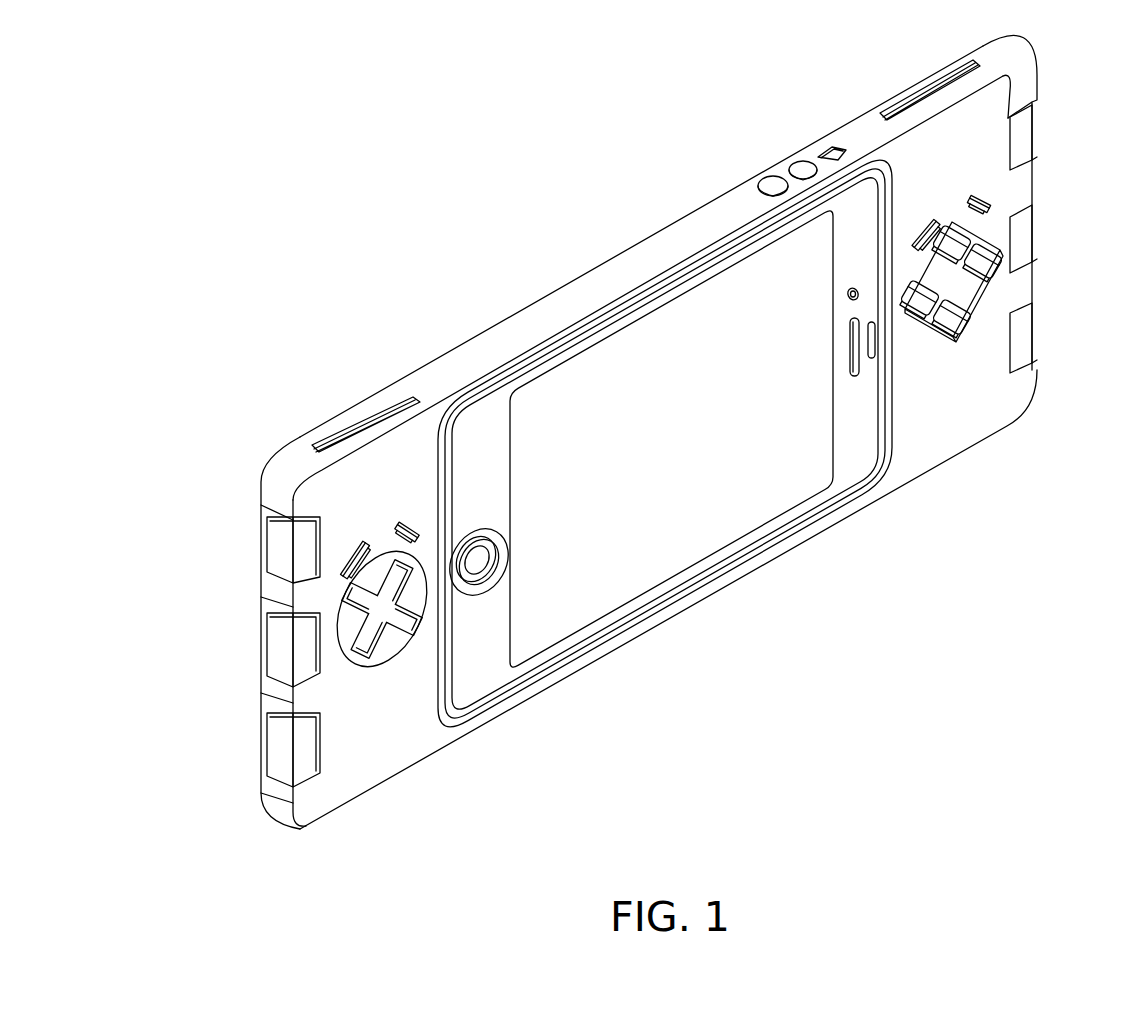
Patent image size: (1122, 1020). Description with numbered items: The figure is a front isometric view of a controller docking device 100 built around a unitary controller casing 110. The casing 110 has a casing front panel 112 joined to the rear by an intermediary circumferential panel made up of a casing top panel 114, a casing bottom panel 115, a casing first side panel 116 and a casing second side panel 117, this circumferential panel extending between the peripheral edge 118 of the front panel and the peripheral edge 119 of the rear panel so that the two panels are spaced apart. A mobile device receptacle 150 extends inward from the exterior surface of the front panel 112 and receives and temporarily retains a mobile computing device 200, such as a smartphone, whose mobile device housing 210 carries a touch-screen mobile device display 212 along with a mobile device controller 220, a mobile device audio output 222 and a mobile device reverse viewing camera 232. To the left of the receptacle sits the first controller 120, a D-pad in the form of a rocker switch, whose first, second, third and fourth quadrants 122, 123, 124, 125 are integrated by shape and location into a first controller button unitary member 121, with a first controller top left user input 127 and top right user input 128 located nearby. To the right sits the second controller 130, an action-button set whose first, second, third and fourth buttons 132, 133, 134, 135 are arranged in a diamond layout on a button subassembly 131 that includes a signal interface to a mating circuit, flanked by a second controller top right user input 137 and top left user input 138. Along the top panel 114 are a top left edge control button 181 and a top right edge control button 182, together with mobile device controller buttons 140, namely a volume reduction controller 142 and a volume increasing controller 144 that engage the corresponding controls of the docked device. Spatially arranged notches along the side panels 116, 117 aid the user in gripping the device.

The controller docking device 100 is at (367, 263).
The controller casing 110 is at (967, 403).
The casing front panel 112 is at (925, 425).
The casing top panel 114 is at (560, 312).
The casing bottom panel 115 is at (512, 708).
The casing first side panel 116 is at (272, 700).
The casing second side panel 117 is at (1033, 110).
The peripheral edge of the casing front panel 118 is at (395, 778).
The peripheral edge of the casing rear panel 119 is at (627, 243).
The first controller 120 is at (332, 598).
The first controller button unitary member 121 is at (348, 598).
The first controller first quadrant 122 is at (407, 578).
The first controller second quadrant 123 is at (422, 592).
The first controller third quadrant 124 is at (380, 652).
The first controller fourth quadrant 125 is at (352, 636).
The first controller top left user input 127 is at (343, 567).
The first controller top right user input 128 is at (407, 523).
The second controller 130 is at (988, 226).
The button subassembly 131 is at (983, 285).
The second controller first button 132 is at (980, 250).
The second controller second button 133 is at (978, 278).
The second controller third button 134 is at (975, 316).
The second controller fourth button 135 is at (928, 328).
The second controller top right user input 137 is at (990, 198).
The second controller top left user input 138 is at (922, 224).
The mobile device controller buttons 140 is at (773, 151).
The volume reduction controller 142 is at (770, 184).
The volume increasing controller 144 is at (803, 166).
The mobile device receptacle 150 is at (448, 690).
The top left edge control button 181 is at (365, 427).
The top right edge control button 182 is at (905, 108).
The mobile computing device 200 is at (656, 566).
The mobile device housing 210 is at (852, 470).
The mobile device display 212 is at (745, 520).
The mobile device controller 220 is at (482, 562).
The mobile device audio output 222 is at (848, 343).
The mobile device reverse viewing camera 232 is at (848, 297).